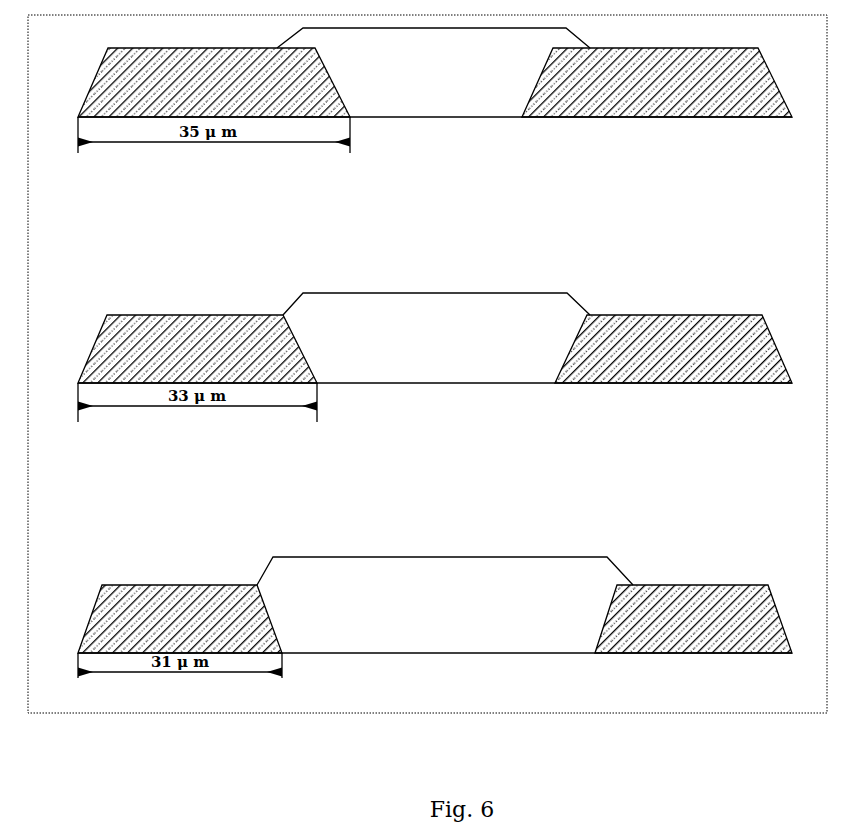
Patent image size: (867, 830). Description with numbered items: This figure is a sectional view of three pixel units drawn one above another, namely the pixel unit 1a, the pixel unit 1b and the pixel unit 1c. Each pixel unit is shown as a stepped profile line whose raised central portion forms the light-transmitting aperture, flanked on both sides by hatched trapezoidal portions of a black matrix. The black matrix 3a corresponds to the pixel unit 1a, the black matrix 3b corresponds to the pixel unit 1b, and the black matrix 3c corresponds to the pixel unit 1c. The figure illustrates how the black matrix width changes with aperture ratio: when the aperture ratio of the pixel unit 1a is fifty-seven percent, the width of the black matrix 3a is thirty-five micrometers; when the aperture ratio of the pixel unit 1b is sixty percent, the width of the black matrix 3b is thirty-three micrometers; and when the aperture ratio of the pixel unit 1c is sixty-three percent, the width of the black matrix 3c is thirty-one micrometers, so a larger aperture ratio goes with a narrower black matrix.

The pixel unit 1a is at (435, 80).
The pixel unit 1b is at (417, 358).
The pixel unit 1c is at (378, 578).
The black matrix 3a is at (298, 93).
The black matrix 3b is at (281, 378).
The black matrix 3c is at (237, 596).